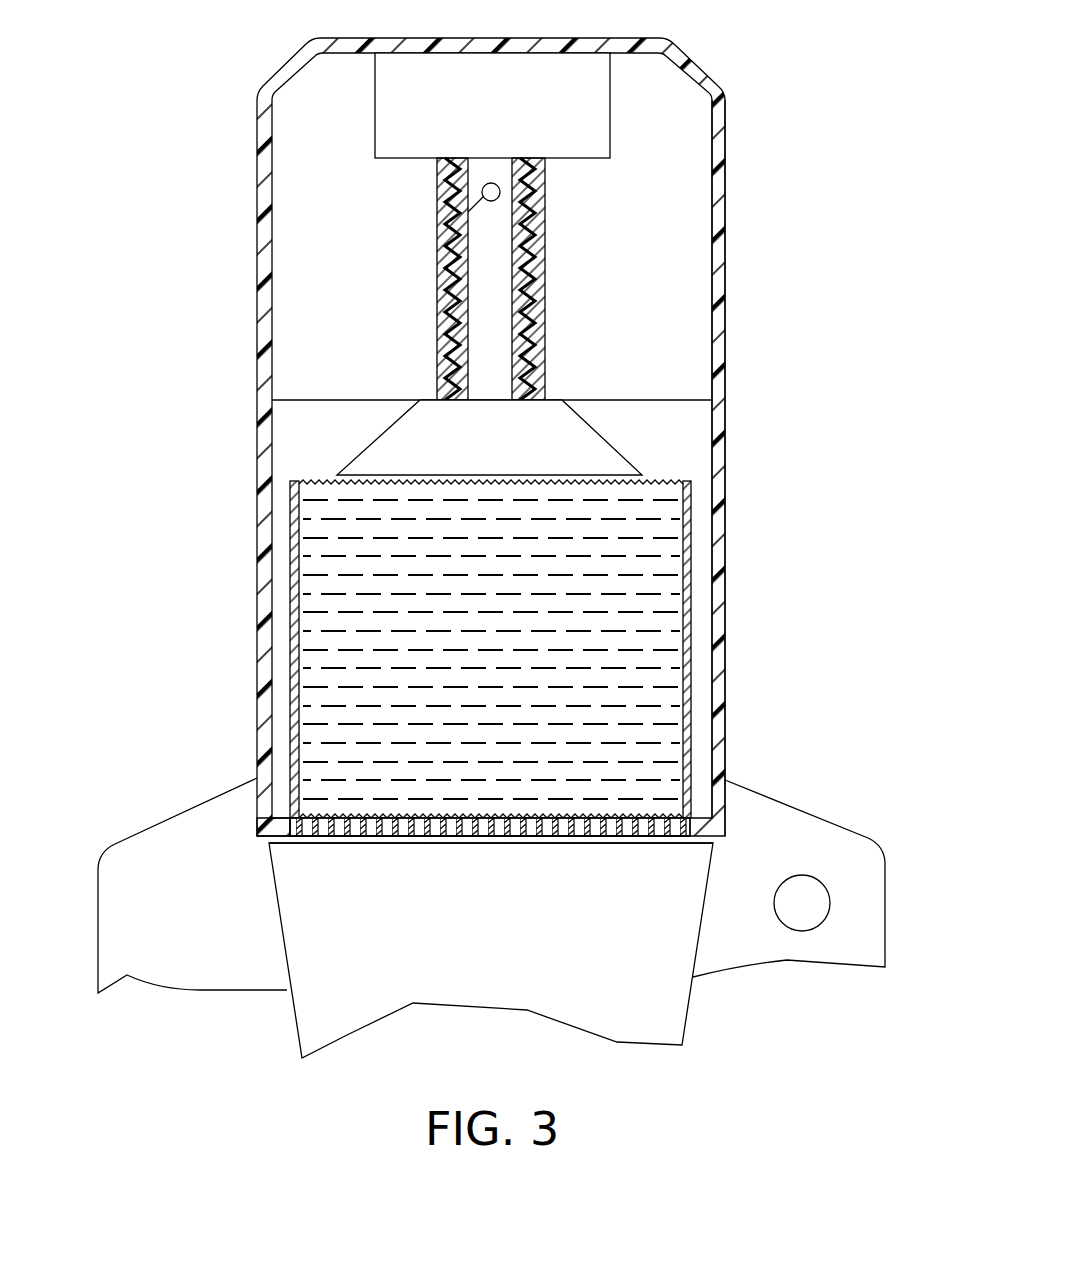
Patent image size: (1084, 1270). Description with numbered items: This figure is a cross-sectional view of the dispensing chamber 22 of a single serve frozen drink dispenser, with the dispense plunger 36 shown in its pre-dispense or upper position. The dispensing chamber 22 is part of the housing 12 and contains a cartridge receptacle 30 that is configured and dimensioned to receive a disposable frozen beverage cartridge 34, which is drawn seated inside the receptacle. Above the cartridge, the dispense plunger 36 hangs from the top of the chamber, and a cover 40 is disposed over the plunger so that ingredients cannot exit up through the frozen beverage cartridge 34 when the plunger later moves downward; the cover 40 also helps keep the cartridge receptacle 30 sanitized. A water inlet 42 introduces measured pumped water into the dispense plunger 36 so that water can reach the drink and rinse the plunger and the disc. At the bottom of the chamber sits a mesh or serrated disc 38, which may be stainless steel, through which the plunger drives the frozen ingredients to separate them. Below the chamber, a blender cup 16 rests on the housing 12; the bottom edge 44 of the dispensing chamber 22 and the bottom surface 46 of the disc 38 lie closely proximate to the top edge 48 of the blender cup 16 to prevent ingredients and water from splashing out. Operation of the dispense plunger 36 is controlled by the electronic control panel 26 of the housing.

The housing 12 is at (98, 915).
The blender cup 16 is at (692, 1003).
The dispensing chamber 22 is at (697, 53).
The electronic control panel 26 is at (822, 923).
The cartridge receptacle 30 is at (698, 612).
The frozen beverage cartridge 34 is at (290, 603).
The dispense plunger 36 is at (540, 259).
The mesh or serrated disc 38 is at (398, 830).
The cover 40 is at (573, 447).
The water inlet 42 is at (445, 210).
The bottom edge 44 is at (253, 842).
The bottom surface 46 is at (343, 835).
The top edge 48 is at (667, 840).